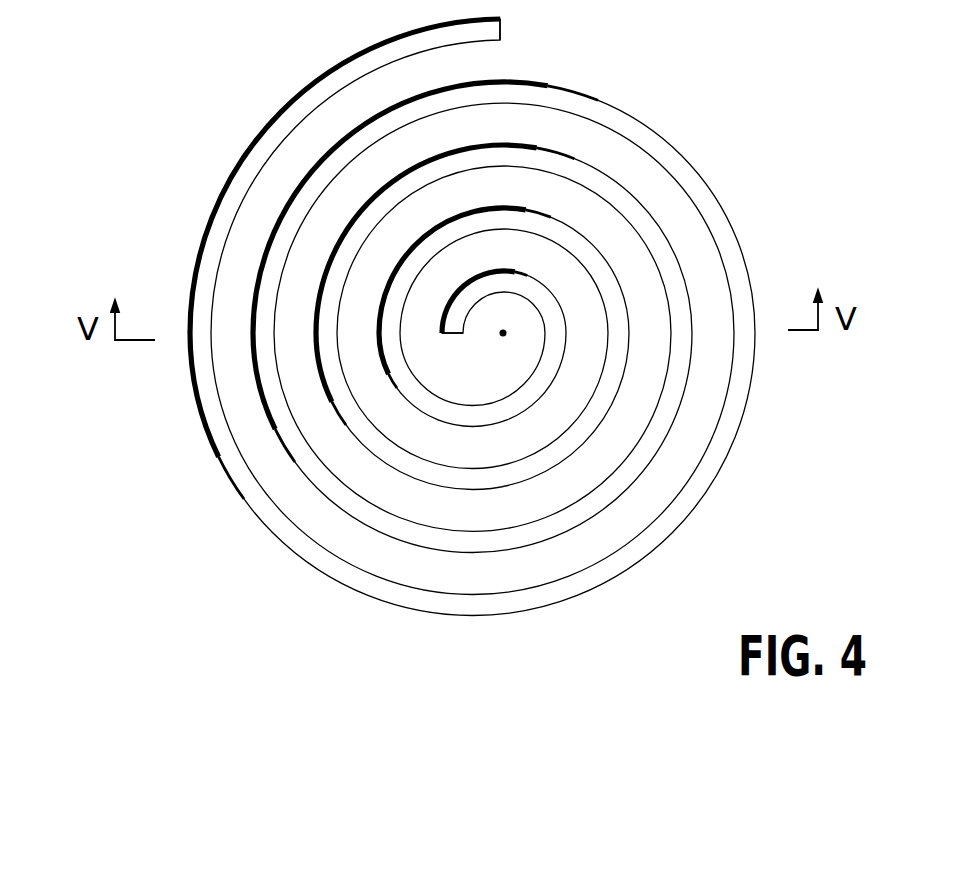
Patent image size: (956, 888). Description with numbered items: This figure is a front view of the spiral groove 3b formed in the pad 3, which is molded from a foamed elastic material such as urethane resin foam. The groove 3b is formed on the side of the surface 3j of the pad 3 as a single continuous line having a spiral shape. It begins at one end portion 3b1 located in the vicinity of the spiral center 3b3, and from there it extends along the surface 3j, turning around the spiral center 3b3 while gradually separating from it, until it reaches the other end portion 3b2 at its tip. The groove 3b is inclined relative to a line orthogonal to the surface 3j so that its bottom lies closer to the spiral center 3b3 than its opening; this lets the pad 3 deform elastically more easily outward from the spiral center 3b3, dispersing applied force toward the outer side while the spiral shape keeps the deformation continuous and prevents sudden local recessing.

The pad 3 is at (454, 347).
The surface 3j is at (454, 347).
The groove 3b is at (705, 153).
The one end portion 3b1 is at (452, 335).
The other end portion 3b2 is at (502, 28).
The spiral center 3b3 is at (503, 333).